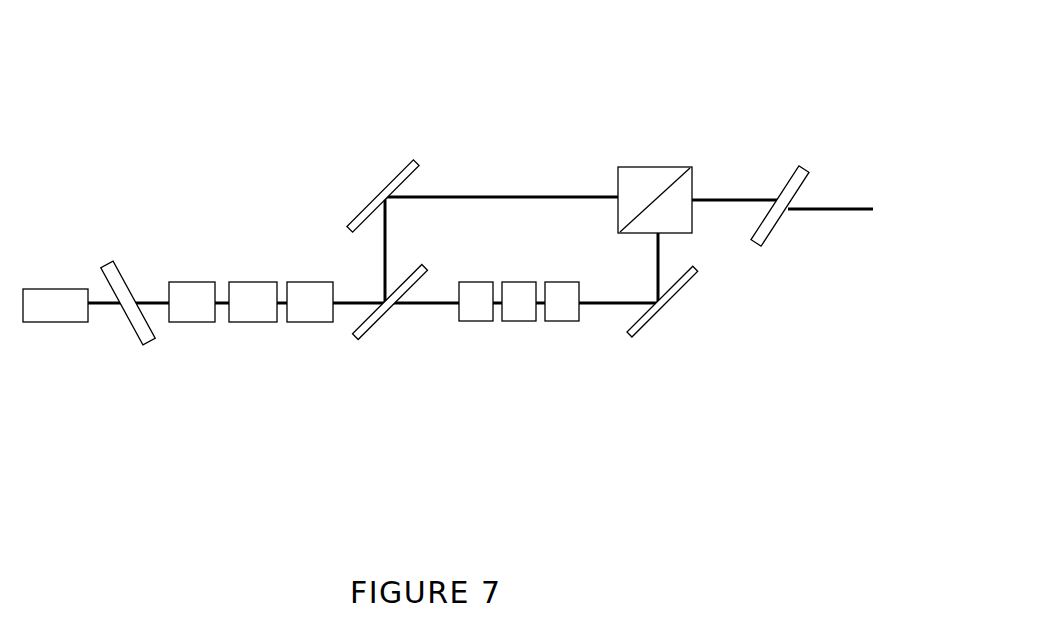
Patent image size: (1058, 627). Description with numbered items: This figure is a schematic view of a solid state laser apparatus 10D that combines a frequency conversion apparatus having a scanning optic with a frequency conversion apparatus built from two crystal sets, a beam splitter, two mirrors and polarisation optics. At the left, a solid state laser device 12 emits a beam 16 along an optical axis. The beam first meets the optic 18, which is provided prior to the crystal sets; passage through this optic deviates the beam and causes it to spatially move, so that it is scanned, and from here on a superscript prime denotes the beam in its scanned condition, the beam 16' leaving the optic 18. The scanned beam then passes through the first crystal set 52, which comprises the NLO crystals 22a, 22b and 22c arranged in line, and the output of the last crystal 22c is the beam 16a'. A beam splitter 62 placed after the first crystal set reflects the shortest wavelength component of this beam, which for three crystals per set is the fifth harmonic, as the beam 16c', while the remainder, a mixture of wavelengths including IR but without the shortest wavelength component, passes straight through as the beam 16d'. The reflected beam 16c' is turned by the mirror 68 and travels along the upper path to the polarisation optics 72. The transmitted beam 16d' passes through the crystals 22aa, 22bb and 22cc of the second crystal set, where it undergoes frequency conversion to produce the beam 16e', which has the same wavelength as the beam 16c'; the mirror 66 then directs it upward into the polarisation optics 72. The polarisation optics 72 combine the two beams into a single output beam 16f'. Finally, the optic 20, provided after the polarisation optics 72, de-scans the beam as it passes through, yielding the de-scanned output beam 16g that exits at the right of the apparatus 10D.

The solid state laser apparatus 10D is at (234, 519).
The solid state laser device 12 is at (33, 182).
The beam 16 is at (108, 385).
The scanned beam 16' is at (128, 287).
The scanned output beam of first crystal set 16a' is at (356, 272).
The scanned shortest wavelength beam 16c' is at (501, 221).
The scanned transmitted beam 16d' is at (422, 339).
The scanned output beam of second crystal set 16e' is at (683, 309).
The scanned combined output beam 16f' is at (734, 172).
The de-scanned beam 16g is at (828, 217).
The optic 18 is at (110, 145).
The optic 20 is at (792, 55).
The NLO crystal 22a is at (173, 173).
The NLO crystal 22b is at (247, 430).
The NLO crystal 22c is at (293, 175).
The NLO crystal 22aa is at (462, 427).
The NLO crystal 22bb is at (524, 276).
The NLO crystal 22cc is at (566, 427).
The first crystal set 52 is at (252, 136).
The beam splitter 62 is at (367, 435).
The mirror 66 is at (680, 403).
The mirror 68 is at (399, 53).
The polarisation optics 72 is at (637, 50).